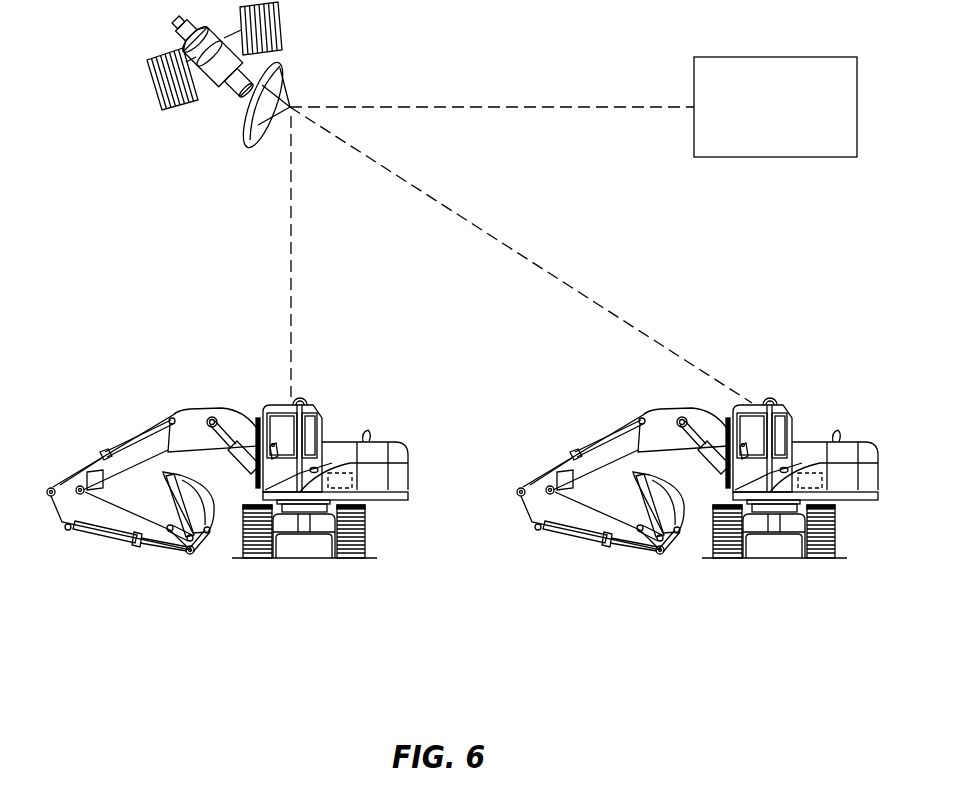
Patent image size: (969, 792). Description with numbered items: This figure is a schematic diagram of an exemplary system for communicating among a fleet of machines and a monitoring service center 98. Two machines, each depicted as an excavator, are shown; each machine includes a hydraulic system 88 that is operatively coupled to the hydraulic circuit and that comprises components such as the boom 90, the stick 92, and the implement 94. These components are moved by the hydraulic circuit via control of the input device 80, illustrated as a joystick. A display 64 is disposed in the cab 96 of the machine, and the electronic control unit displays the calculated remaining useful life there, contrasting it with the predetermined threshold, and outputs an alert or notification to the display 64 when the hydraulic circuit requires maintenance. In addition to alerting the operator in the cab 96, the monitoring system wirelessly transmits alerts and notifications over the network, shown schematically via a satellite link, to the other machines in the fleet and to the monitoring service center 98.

The display 64 is at (262, 410).
The input device 80 is at (276, 446).
The hydraulic system 88 is at (233, 467).
The boom 90 is at (204, 445).
The stick 92 is at (123, 522).
The implement 94 is at (198, 494).
The cab 96 is at (312, 404).
The monitoring service center 98 is at (776, 56).